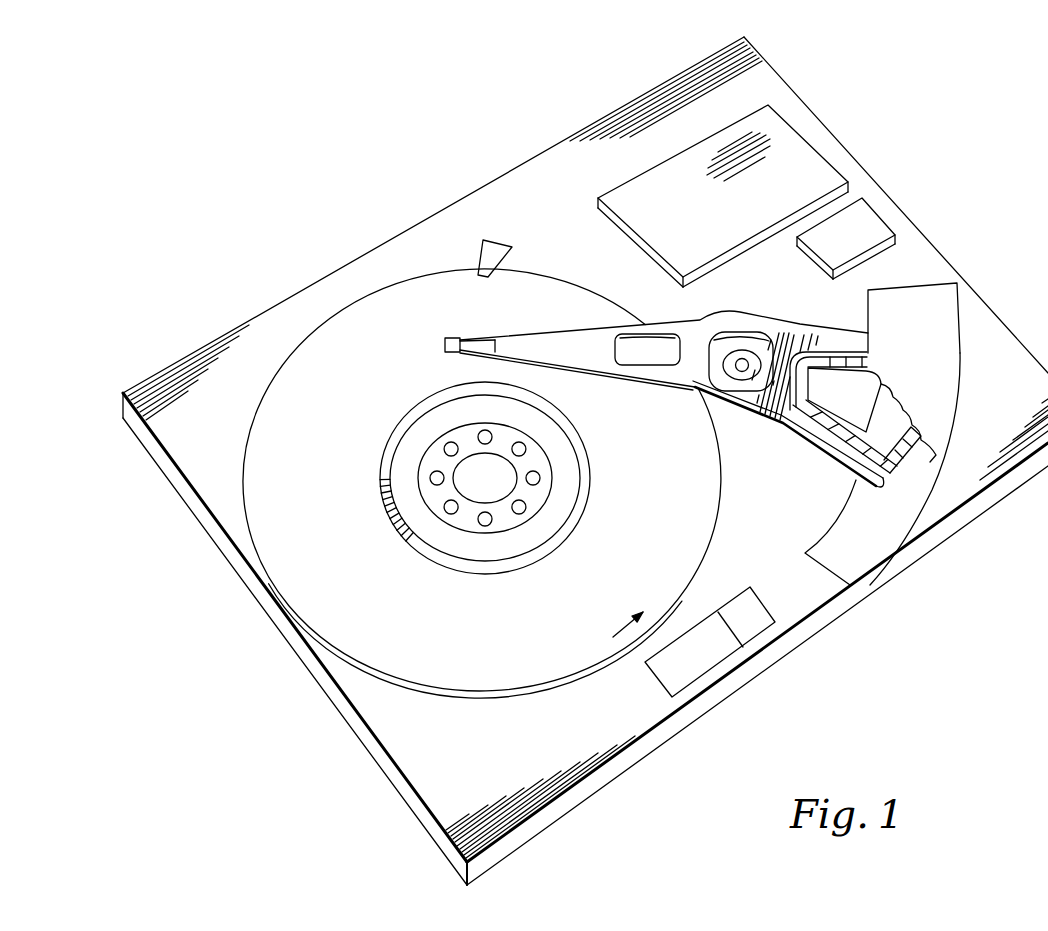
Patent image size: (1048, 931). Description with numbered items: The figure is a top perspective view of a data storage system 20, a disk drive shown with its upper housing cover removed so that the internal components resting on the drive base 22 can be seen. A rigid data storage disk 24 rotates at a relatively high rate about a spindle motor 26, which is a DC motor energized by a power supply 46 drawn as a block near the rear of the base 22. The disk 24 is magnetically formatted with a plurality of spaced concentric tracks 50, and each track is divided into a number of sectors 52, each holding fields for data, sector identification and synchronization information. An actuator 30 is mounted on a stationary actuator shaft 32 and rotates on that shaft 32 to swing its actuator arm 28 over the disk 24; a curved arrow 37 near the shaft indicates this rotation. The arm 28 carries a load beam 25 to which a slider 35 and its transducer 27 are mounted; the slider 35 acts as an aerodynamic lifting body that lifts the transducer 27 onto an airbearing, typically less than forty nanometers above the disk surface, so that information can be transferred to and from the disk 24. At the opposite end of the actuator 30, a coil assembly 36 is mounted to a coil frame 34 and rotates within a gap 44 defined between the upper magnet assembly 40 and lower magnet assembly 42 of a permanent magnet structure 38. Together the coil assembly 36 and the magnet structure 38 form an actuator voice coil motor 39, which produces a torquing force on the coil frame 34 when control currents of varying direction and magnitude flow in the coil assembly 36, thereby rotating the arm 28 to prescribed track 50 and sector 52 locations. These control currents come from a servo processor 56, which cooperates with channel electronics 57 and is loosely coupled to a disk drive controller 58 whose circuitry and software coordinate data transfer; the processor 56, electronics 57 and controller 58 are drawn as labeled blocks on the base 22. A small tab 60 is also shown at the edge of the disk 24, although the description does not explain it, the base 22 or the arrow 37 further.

The data storage system 20 is at (935, 175).
The base plate 22 is at (772, 662).
The data storage disk 24 is at (306, 460).
The load beam 25 is at (468, 348).
The spindle motor 26 is at (498, 502).
The transducer 27 is at (442, 355).
The actuator arm 28 is at (597, 362).
The actuator 30 is at (755, 408).
The actuator shaft 32 is at (742, 358).
The coil frame 34 is at (797, 333).
The slider 35 is at (447, 340).
The coil assembly 36 is at (815, 370).
The arm rotation direction 37 is at (737, 422).
The permanent magnet structure 38 is at (967, 310).
The actuator voice coil motor 39 is at (850, 482).
The upper magnet assembly 40 is at (953, 355).
The lower magnet assembly 42 is at (830, 550).
The gap 44 is at (930, 458).
The power supply 46 is at (692, 227).
The concentric tracks 50 is at (395, 427).
The sector 52 is at (385, 503).
The servo processor 56 is at (724, 654).
The channel electronics 57 is at (762, 629).
The disk drive controller 58 is at (864, 242).
The disc stop tab 60 is at (500, 242).